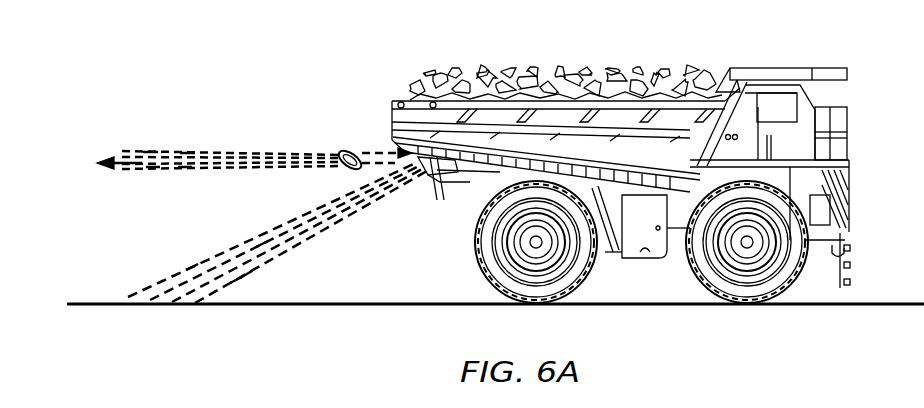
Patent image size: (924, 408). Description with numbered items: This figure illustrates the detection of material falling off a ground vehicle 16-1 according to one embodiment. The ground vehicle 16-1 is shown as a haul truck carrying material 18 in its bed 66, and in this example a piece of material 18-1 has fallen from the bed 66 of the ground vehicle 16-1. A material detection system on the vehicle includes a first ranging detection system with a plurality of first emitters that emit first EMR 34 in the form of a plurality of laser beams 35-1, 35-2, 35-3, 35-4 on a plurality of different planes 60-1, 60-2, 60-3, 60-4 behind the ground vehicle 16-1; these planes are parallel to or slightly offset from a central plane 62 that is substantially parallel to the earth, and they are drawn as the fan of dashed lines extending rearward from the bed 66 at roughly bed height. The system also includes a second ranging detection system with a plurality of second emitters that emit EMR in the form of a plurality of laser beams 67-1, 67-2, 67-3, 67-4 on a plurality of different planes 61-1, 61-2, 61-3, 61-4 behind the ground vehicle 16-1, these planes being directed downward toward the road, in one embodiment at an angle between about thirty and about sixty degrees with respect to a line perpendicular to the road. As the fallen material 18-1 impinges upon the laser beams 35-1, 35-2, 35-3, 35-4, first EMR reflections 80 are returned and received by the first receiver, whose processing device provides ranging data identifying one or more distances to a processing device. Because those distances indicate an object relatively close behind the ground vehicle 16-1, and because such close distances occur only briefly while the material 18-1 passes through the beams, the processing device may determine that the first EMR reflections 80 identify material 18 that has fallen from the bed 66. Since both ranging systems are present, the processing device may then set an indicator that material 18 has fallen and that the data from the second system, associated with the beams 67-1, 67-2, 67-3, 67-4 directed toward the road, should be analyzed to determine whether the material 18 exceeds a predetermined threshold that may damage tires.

The ground vehicle 16-1 is at (820, 68).
The material 18 is at (603, 63).
The bed 66 is at (414, 108).
The material 18-1 is at (342, 153).
The first EMR reflections 80 is at (377, 152).
The first EMR 34 is at (302, 78).
The central plane 62 is at (122, 168).
The laser beam 35-1 is at (225, 152).
The laser beam 35-2 is at (252, 157).
The laser beam 35-3 is at (238, 168).
The laser beam 35-4 is at (268, 170).
The plane 60-1 is at (187, 155).
The plane 60-2 is at (150, 157).
The plane 60-3 is at (153, 165).
The plane 60-4 is at (183, 170).
The plane 61-1 is at (148, 293).
The plane 61-2 is at (162, 295).
The plane 61-3 is at (307, 238).
The plane 61-4 is at (287, 257).
The laser beam 67-1 is at (193, 270).
The laser beam 67-2 is at (263, 243).
The laser beam 67-3 is at (245, 270).
The laser beam 67-4 is at (237, 283).